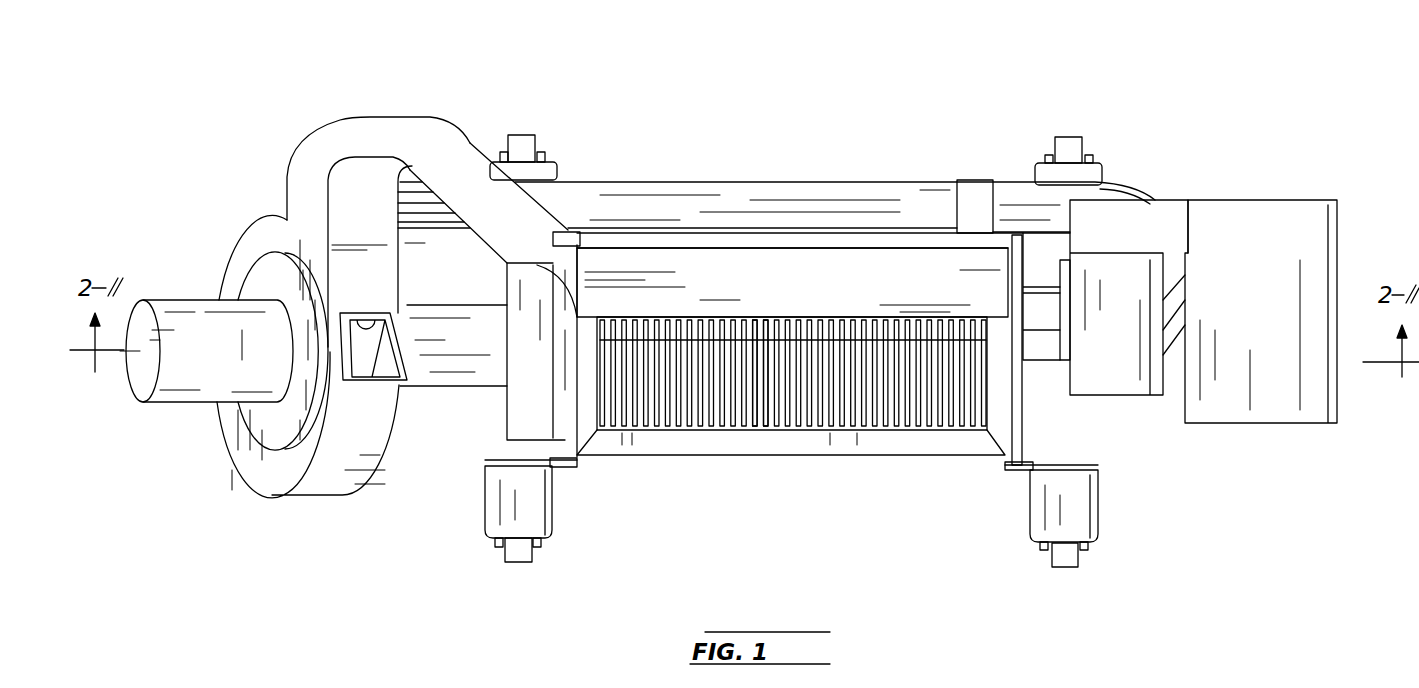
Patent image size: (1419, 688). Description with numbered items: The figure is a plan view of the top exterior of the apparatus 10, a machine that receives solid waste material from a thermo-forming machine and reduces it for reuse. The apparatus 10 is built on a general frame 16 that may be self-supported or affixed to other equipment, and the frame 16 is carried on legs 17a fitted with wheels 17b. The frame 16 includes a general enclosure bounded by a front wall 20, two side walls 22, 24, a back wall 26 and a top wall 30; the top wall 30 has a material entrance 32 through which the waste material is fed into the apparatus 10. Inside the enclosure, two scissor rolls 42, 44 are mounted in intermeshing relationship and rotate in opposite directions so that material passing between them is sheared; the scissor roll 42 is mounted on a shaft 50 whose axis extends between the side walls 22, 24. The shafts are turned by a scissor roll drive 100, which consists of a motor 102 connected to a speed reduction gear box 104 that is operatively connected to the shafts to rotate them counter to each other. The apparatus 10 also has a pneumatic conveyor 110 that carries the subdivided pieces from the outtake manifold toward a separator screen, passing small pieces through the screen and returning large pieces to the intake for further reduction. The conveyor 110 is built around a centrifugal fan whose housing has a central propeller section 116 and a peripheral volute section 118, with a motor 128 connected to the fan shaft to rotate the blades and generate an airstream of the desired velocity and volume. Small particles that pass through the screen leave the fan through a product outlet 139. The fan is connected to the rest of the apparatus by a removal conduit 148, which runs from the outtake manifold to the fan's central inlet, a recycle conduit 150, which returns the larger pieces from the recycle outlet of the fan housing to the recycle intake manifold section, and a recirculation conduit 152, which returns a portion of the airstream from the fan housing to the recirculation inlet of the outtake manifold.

The apparatus 10 is at (925, 127).
The general frame 16 is at (1026, 445).
The legs 17a is at (523, 498).
The wheels 17b is at (527, 140).
The front wall 20 is at (945, 443).
The side wall 22 is at (570, 407).
The side wall 24 is at (1015, 406).
The back wall 26 is at (745, 248).
The top wall 30 is at (835, 290).
The material entrance 32 is at (760, 410).
The scissor roll 42 is at (717, 327).
The scissor roll 44 is at (683, 412).
The shaft 50 is at (1040, 307).
The scissor roll drive 100 is at (1200, 200).
The motor 102 is at (1238, 268).
The speed reduction gear box 104 is at (1088, 361).
The pneumatic conveyor 110 is at (243, 192).
The central propeller section 116 is at (257, 415).
The peripheral volute section 118 is at (293, 470).
The motor 128 is at (195, 350).
The product outlet 139 is at (380, 317).
The removal conduit 148 is at (432, 395).
The recycle conduit 150 is at (455, 160).
The recirculation conduit 152 is at (673, 203).